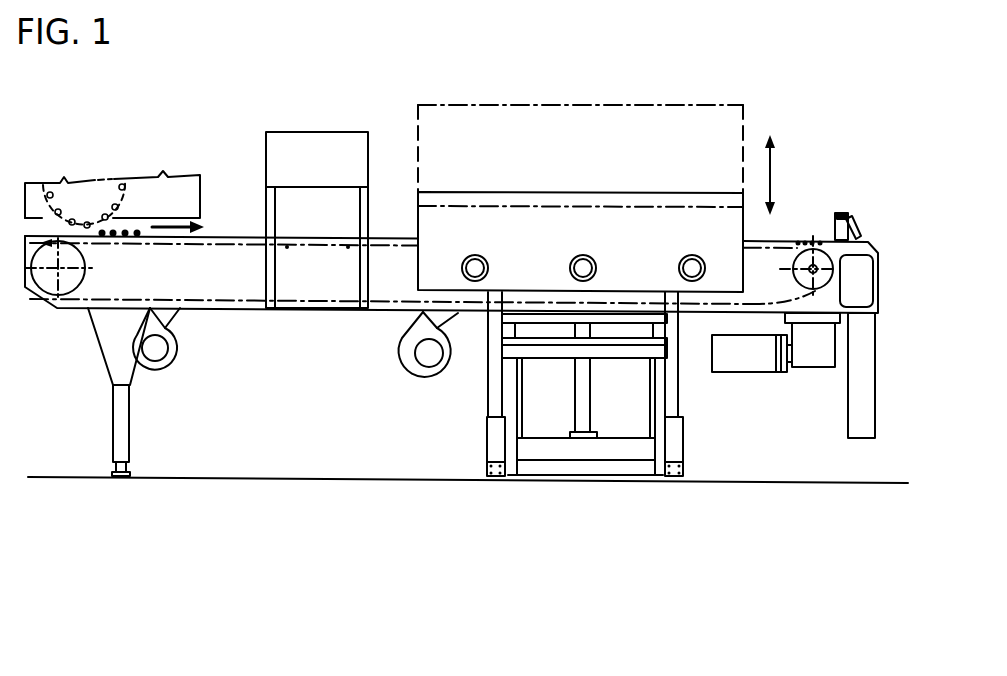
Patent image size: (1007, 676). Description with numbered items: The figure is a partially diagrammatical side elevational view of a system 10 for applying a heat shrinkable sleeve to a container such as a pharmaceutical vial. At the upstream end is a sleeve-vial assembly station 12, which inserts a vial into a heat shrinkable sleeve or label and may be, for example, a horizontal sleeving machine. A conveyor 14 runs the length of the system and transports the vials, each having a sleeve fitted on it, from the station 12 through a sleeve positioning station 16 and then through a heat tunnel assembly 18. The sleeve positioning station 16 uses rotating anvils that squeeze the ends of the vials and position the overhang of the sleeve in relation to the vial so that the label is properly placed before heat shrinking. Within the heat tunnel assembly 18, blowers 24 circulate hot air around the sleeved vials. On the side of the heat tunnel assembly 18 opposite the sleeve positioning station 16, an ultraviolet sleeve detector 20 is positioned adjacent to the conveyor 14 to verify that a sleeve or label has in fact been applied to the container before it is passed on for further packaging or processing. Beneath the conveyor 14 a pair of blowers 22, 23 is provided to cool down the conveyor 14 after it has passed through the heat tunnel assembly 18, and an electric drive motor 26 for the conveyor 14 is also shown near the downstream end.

The system 10 is at (322, 96).
The sleeve-vial assembly station 12 is at (105, 176).
The conveyor 14 is at (245, 233).
The sleeve positioning station 16 is at (296, 128).
The heat tunnel assembly 18 is at (666, 186).
The ultraviolet sleeve detector 20 is at (847, 206).
The blower 22 is at (152, 371).
The blower 23 is at (413, 369).
The blowers 24 is at (474, 256).
The electric drive motor 26 is at (735, 371).